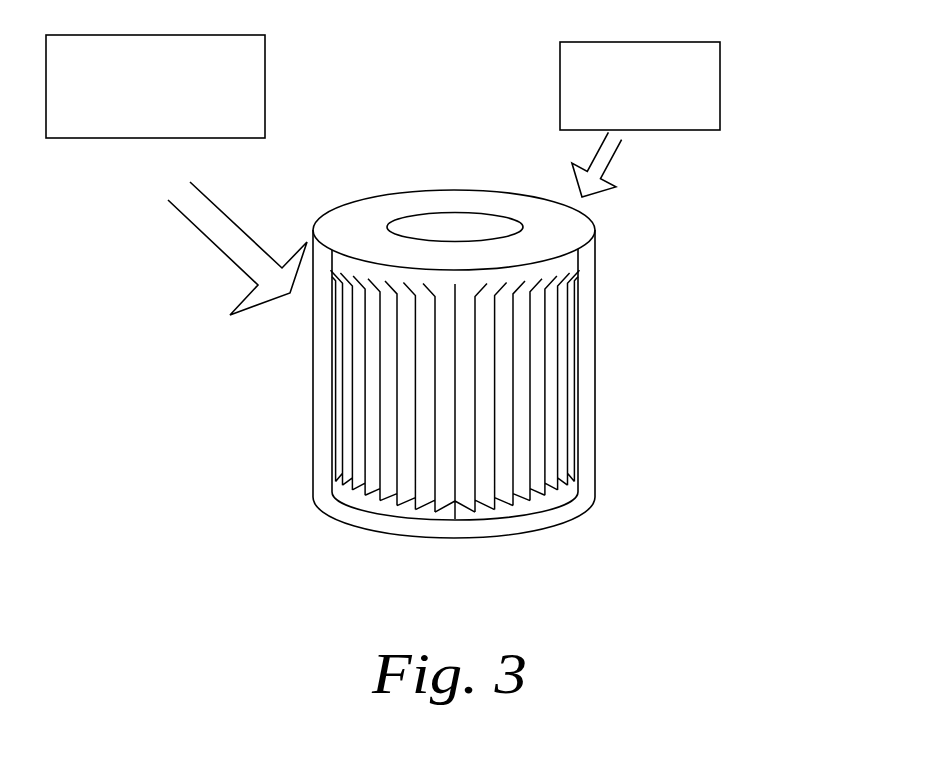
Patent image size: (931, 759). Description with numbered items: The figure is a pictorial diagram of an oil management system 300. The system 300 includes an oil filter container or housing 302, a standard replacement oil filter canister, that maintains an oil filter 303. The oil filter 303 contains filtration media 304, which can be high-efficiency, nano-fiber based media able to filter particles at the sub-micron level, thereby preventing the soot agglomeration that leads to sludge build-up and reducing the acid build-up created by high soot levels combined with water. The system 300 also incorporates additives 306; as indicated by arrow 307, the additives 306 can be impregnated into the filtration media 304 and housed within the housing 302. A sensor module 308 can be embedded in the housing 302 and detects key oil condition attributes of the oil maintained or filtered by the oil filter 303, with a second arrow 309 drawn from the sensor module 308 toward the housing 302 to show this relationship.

The oil management system 300 is at (416, 392).
The oil filter container or housing 302 is at (595, 463).
The oil filter 303 is at (578, 302).
The filtration media 304 is at (560, 377).
The additives 306 is at (265, 85).
The arrow 307 is at (222, 258).
The sensor module 308 is at (720, 85).
The sensor module connection arrow 309 is at (615, 162).